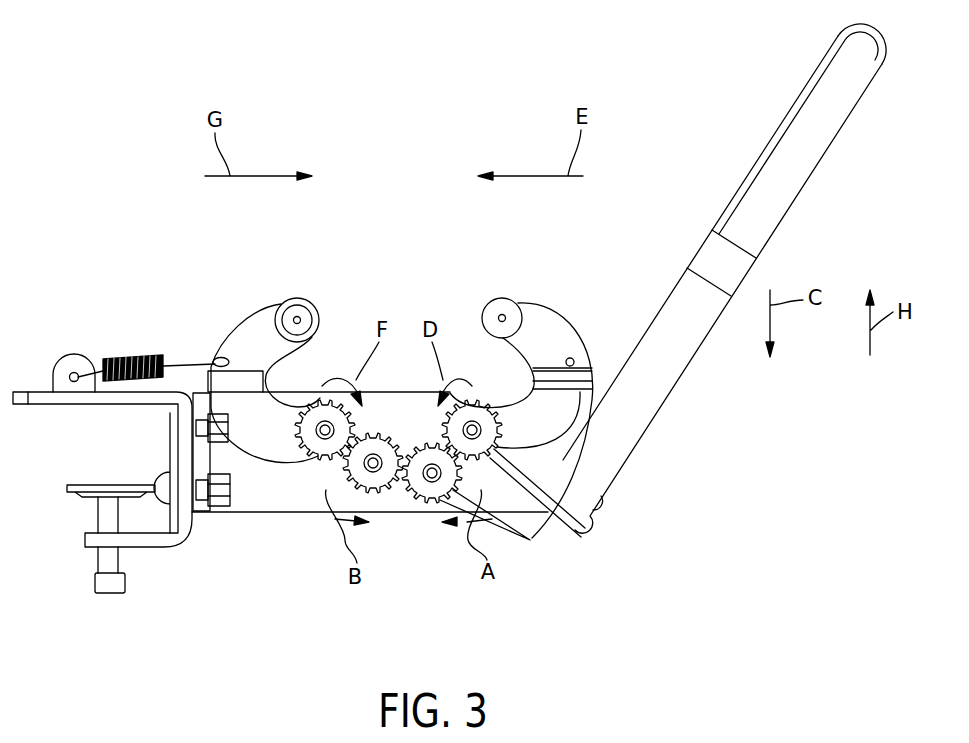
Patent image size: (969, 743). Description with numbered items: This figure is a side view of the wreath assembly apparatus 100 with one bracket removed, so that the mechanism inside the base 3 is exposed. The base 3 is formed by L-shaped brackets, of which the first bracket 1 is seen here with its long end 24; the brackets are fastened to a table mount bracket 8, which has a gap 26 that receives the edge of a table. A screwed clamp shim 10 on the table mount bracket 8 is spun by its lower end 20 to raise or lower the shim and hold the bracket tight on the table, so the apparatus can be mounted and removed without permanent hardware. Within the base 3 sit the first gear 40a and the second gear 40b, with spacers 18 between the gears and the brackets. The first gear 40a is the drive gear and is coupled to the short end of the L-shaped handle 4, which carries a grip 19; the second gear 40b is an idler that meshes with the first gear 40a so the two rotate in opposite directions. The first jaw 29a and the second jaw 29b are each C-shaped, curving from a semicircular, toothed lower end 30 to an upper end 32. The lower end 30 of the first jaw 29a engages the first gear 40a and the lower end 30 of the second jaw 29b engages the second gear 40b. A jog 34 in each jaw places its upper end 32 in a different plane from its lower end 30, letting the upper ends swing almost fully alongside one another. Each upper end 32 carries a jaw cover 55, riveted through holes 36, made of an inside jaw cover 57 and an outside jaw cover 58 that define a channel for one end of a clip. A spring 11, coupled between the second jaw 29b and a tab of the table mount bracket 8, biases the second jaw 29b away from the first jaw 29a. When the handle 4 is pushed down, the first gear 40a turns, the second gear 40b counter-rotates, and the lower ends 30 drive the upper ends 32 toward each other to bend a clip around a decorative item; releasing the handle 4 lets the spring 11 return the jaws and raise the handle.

The wreath assembly apparatus 100 is at (100, 118).
The first bracket 1 is at (285, 504).
The base 3 is at (77, 308).
The handle 4 is at (686, 374).
The table mount bracket 8 is at (50, 403).
The clamp shim 10 is at (76, 572).
The spring 11 is at (115, 358).
The spacers 18 is at (505, 478).
The grip 19 is at (846, 82).
The lower end 20 is at (120, 583).
The long end 24 is at (244, 507).
The gap 26 is at (68, 466).
The first jaw 29a is at (578, 336).
The second jaw 29b is at (232, 326).
The lower end 30 is at (318, 378).
The upper end 32 is at (326, 278).
The jog 34 is at (216, 382).
The holes 36 is at (305, 296).
The first gear 40a is at (425, 502).
The second gear 40b is at (373, 495).
The jaw cover 55 is at (262, 292).
The inside jaw cover 57 is at (500, 312).
The outside jaw cover 58 is at (296, 317).